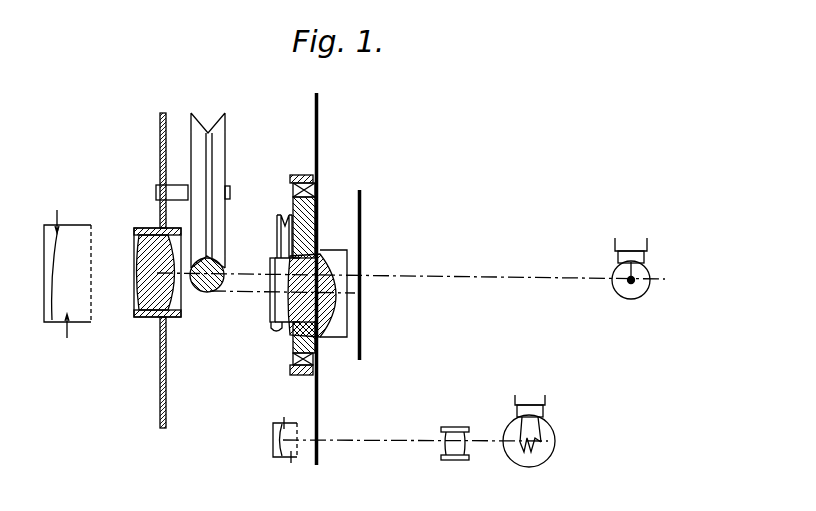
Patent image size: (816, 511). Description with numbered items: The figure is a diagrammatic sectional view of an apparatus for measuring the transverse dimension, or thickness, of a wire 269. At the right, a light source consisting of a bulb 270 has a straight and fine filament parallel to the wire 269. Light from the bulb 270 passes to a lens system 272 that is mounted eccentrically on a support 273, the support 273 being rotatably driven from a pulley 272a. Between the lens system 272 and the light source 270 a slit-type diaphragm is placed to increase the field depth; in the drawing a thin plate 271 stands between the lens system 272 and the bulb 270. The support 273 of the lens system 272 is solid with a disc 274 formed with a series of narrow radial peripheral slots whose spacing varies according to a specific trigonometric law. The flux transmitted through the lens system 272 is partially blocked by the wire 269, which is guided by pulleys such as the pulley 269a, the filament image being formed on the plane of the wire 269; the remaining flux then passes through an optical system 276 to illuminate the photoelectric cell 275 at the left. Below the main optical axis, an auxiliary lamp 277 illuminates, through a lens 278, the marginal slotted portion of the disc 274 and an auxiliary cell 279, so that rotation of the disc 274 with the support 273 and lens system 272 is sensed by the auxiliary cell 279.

The wire 269 is at (203, 285).
The pulley 269a is at (214, 140).
The bulb 270 is at (630, 299).
The plate 271 is at (362, 217).
The lens system 272 is at (326, 251).
The pulley 272a is at (273, 334).
The support 273 is at (315, 203).
The disc 274 is at (319, 124).
The photoelectric cell 275 is at (84, 326).
The optical system 276 is at (139, 292).
The auxiliary lamp 277 is at (553, 431).
The lens 278 is at (457, 427).
The auxiliary cell 279 is at (273, 457).